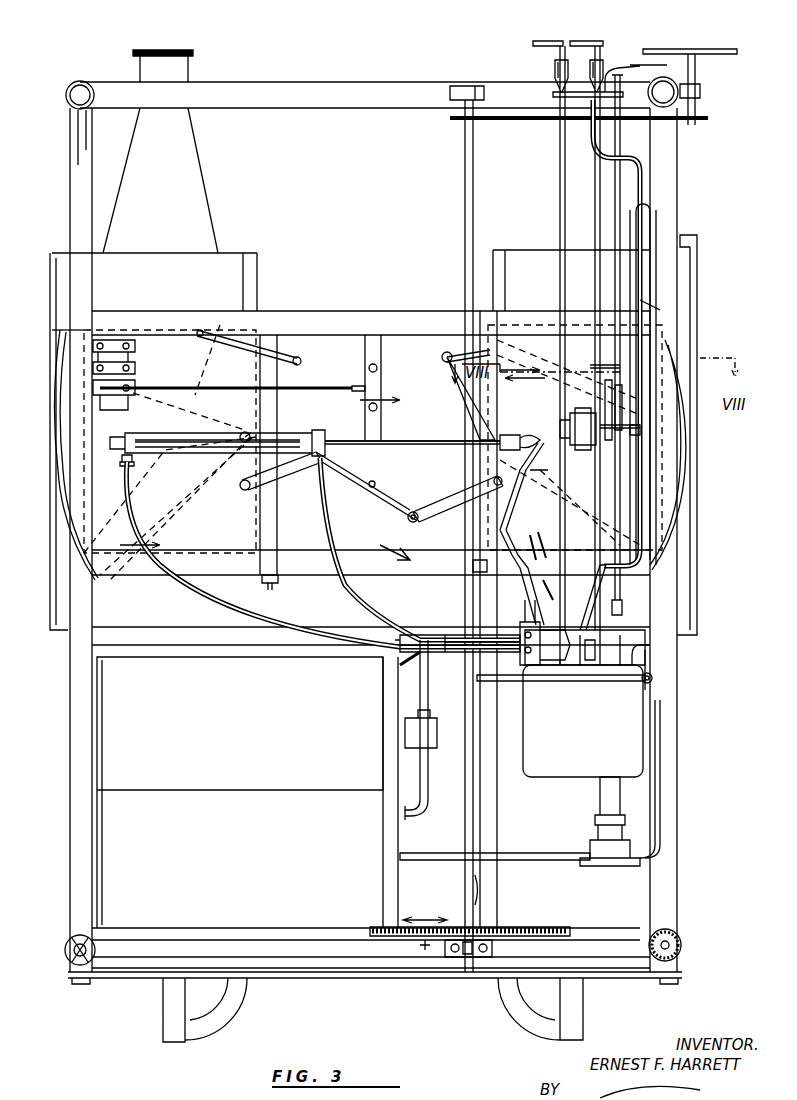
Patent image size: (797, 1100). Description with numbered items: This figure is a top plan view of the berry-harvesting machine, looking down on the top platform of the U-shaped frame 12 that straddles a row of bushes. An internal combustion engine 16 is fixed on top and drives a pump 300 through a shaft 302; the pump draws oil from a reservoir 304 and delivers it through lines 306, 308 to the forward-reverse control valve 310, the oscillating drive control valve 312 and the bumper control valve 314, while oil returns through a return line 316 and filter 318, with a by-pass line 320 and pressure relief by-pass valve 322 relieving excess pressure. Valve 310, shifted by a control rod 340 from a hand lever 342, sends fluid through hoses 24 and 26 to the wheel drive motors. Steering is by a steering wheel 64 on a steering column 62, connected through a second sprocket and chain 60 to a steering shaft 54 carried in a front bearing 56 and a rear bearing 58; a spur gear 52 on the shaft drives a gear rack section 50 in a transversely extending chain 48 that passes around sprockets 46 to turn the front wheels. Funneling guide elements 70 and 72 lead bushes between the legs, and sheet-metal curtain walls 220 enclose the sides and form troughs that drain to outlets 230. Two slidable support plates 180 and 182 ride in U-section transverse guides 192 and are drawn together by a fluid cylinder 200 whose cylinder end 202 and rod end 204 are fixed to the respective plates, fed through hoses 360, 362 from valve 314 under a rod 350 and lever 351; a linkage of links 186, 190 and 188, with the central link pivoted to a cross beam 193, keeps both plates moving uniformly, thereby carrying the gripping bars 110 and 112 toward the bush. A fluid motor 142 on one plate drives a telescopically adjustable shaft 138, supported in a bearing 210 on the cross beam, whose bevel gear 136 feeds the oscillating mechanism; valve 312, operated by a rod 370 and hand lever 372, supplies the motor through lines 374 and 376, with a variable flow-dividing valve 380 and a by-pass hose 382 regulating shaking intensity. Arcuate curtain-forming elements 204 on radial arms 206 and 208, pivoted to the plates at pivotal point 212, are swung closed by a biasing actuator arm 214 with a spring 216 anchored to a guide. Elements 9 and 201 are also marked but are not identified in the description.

The conveyor belt 9 is at (470, 890).
The frame 12 is at (78, 230).
The internal combustion engine 16 is at (630, 725).
The circuit conduit hose 24 is at (645, 238).
The hose 26 is at (645, 225).
The sprocket 46 is at (95, 925).
The transversely extending chain 48 is at (680, 928).
The gear rack section 50 is at (400, 945).
The spur gear 52 is at (470, 957).
The steering shaft 54 is at (470, 195).
The bearing 56 is at (462, 957).
The bearing 58 is at (462, 86).
The second sprocket and chain 60 is at (496, 116).
The steering column 62 is at (696, 90).
The steering wheel 64 is at (708, 50).
The funneling guide element 70 is at (220, 1008).
The funneling guide element 72 is at (528, 1012).
The gripping bar 110 is at (282, 578).
The gripping bar 112 is at (470, 572).
The bevel gear 136 is at (95, 380).
The shaft 138 is at (424, 300).
The fluid motor 142 is at (447, 357).
The slidable support plate 180 is at (632, 462).
The slidable support plate 182 is at (100, 462).
The link 186 is at (285, 478).
The link 188 is at (440, 506).
The central link 190 is at (336, 472).
The transverse guide 192 is at (415, 518).
The cross beam 193 is at (412, 453).
The fluid cylinder 200 is at (288, 440).
The mold plate 201 is at (68, 508).
The cylinder end 202 is at (118, 445).
The arcuate curtain-forming element 204 is at (710, 482).
The radial arm 206 is at (190, 475).
The radial arm 208 is at (185, 418).
The bearing 210 is at (358, 340).
The pivotal point 212 is at (235, 440).
The biasing actuator arm 214 is at (300, 378).
The spring 216 is at (280, 312).
The curtain wall 220 is at (52, 287).
The outlet 230 is at (180, 76).
The pump 300 is at (632, 858).
The shaft 302 is at (605, 800).
The reservoir 304 is at (168, 800).
The line 306 is at (518, 866).
The line 308 is at (645, 695).
The forward-reverse control valve 310 is at (605, 652).
The oscillating drive control valve 312 is at (563, 655).
The control valve 314 is at (540, 665).
The return line 316 is at (400, 665).
The filter 318 is at (405, 732).
The by-pass line 320 is at (478, 700).
The pressure relief by-pass valve 322 is at (655, 677).
The control rod 340 is at (598, 62).
The hand lever 342 is at (585, 40).
The rod 350 is at (607, 132).
The lever 351 is at (612, 78).
The hose 360 is at (300, 642).
The hose 362 is at (376, 620).
The rod 370 is at (550, 250).
The hand lever 372 is at (540, 40).
The line 374 is at (520, 596).
The line 376 is at (531, 645).
The variable flow-dividing valve 380 is at (492, 542).
The by-pass hose 382 is at (455, 600).